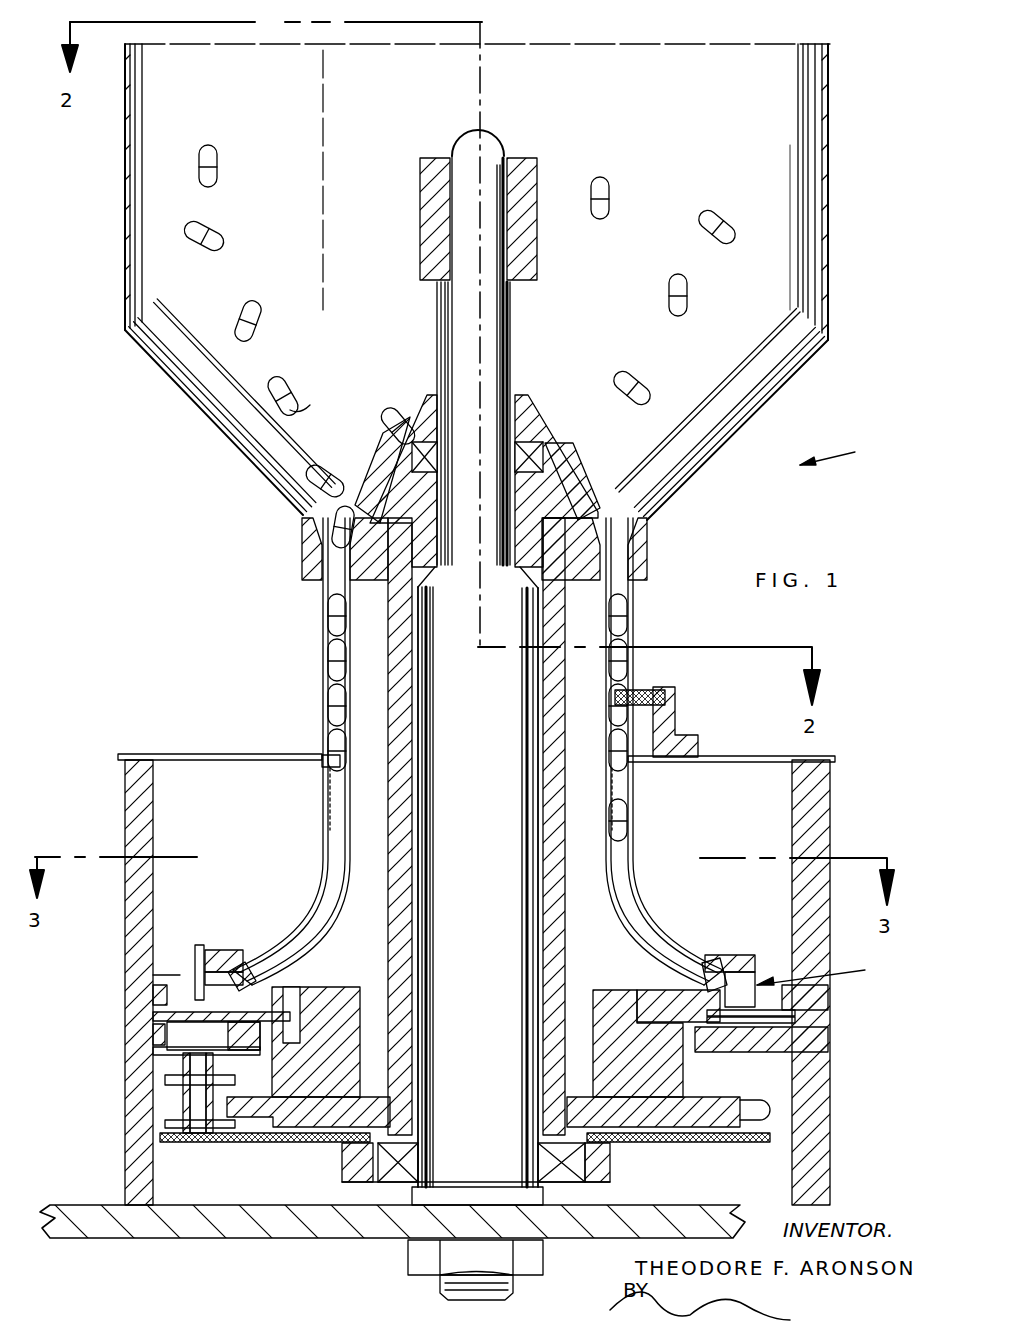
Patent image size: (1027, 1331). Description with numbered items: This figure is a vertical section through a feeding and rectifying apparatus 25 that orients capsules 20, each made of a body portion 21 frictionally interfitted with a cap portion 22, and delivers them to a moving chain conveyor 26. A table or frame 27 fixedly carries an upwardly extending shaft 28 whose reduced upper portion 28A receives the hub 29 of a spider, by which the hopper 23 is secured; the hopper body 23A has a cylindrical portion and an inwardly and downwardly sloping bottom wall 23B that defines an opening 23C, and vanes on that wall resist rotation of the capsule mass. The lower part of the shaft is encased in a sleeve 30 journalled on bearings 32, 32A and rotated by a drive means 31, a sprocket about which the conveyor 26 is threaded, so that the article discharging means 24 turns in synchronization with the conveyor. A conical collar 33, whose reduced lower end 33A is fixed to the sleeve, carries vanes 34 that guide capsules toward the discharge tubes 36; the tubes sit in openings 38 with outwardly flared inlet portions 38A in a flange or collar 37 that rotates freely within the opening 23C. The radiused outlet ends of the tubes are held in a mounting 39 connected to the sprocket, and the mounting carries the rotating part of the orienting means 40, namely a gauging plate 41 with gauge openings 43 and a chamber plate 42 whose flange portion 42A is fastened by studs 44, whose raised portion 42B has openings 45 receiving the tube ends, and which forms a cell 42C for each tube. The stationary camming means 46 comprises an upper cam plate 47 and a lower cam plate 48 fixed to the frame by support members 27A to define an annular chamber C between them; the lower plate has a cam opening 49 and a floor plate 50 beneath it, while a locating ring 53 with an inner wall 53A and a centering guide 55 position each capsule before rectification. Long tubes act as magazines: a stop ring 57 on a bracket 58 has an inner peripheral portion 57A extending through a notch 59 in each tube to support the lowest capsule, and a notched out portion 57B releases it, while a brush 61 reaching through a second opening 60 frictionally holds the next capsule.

The capsule 20 is at (228, 237).
The body portion 21 is at (313, 398).
The cap portion 22 is at (285, 378).
The hopper 23 is at (515, 312).
The hopper body 23A is at (803, 183).
The bottom wall 23B is at (770, 418).
The opening 23C is at (647, 525).
The article discharging means 24 is at (640, 565).
The feeding and rectifying apparatus 25 is at (841, 450).
The conveyor 26 is at (175, 1137).
The frame 27 is at (178, 1240).
The support members 27A is at (127, 1105).
The shaft 28 is at (440, 1170).
The reduced portion 28A is at (513, 297).
The hub 29 is at (492, 147).
The sleeve 30 is at (567, 925).
The drive means 31 is at (315, 1130).
The bearing 32 is at (530, 430).
The bearing 32A is at (598, 1177).
The conical collar 33 is at (515, 397).
The lower end of collar 33A is at (512, 552).
The vanes 34 is at (380, 455).
The discharge tube 36 is at (635, 615).
The flange or collar 37 is at (501, 857).
The openings 38 is at (459, 751).
The inlet portion 38A is at (620, 500).
The mounting 39 is at (350, 985).
The orienting or rectifying means 40 is at (825, 970).
The gauging plate 41 is at (330, 965).
The chamber plate 42 is at (245, 955).
The flange portion 42A is at (268, 975).
The raised portion 42B is at (202, 945).
The cell or chamber 42C is at (195, 960).
The gauge openings 43 is at (165, 1035).
The fasteners or studs 44 is at (380, 1030).
The openings 45 is at (245, 950).
The stationary camming means 46 is at (83, 1057).
The upper cam plate 47 is at (150, 1025).
The lower cam plate 48 is at (170, 1045).
The cam opening 49 is at (183, 1060).
The floor plate 50 is at (173, 1108).
The locating ring 53 is at (152, 995).
The inner peripheral wall 53A is at (152, 975).
The centering cam or guide 55 is at (224, 986).
The stop ring 57 is at (165, 757).
The inner peripheral portion 57A is at (325, 752).
The notched out portion 57B is at (675, 715).
The bracket or support 58 is at (155, 790).
The notch or opening 59 is at (322, 782).
The second opening 60 is at (322, 640).
The brush 61 is at (665, 695).
The annular chamber C is at (150, 1015).